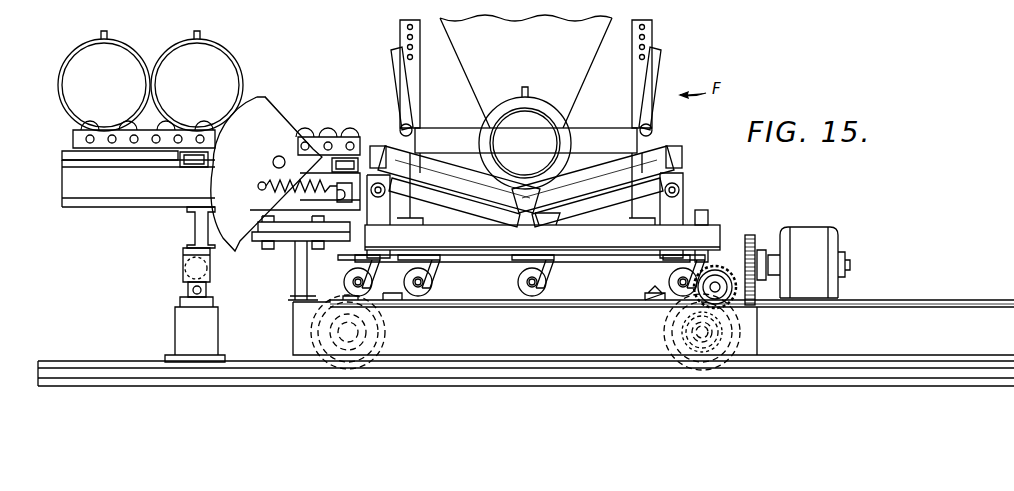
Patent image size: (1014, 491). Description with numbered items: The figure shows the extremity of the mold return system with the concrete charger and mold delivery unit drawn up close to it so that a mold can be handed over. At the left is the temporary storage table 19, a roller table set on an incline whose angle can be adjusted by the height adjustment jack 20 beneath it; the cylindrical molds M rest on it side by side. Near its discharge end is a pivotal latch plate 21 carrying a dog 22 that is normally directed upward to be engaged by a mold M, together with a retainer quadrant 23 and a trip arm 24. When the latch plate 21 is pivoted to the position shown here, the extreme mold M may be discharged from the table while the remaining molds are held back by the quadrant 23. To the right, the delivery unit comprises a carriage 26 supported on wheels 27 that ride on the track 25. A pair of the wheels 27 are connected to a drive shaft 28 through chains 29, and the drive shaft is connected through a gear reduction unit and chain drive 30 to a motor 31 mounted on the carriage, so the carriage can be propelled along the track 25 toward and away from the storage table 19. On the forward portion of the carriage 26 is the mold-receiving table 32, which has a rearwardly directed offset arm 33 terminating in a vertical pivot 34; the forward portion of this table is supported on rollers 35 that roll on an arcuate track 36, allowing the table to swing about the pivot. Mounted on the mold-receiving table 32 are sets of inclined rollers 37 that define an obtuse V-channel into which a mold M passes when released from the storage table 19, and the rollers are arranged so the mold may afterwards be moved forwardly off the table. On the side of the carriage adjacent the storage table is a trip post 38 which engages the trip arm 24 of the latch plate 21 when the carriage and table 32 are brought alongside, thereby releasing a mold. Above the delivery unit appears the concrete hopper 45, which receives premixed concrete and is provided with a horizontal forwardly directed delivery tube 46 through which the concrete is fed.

The temporary storage table 19 is at (70, 137).
The height adjustment jack 20 is at (186, 323).
The latch plate 21 is at (282, 116).
The dog 22 is at (316, 136).
The retainer quadrant 23 is at (258, 96).
The trip arm 24 is at (236, 253).
The track 25 is at (789, 372).
The carriage 26 is at (595, 347).
The wheels 27 is at (342, 356).
The drive shaft 28 is at (718, 285).
The chains 29 is at (737, 292).
The chain drive 30 is at (756, 242).
The motor 31 is at (823, 242).
The mold-receiving table 32 is at (652, 232).
The offset arm 33 is at (711, 230).
The vertical pivot 34 is at (702, 212).
The rollers 35 is at (384, 286).
The arcuate track 36 is at (571, 291).
The inclined rollers 37 is at (449, 172).
The trip posts 38 is at (287, 241).
The concrete hopper 45 is at (526, 75).
The delivery tube 46 is at (530, 117).
The mold M is at (492, 128).